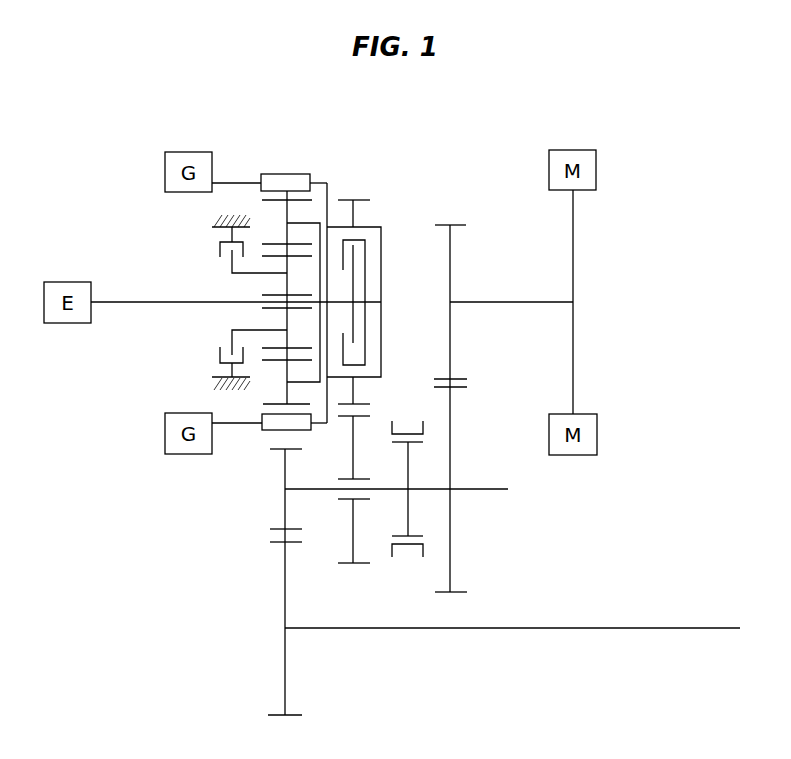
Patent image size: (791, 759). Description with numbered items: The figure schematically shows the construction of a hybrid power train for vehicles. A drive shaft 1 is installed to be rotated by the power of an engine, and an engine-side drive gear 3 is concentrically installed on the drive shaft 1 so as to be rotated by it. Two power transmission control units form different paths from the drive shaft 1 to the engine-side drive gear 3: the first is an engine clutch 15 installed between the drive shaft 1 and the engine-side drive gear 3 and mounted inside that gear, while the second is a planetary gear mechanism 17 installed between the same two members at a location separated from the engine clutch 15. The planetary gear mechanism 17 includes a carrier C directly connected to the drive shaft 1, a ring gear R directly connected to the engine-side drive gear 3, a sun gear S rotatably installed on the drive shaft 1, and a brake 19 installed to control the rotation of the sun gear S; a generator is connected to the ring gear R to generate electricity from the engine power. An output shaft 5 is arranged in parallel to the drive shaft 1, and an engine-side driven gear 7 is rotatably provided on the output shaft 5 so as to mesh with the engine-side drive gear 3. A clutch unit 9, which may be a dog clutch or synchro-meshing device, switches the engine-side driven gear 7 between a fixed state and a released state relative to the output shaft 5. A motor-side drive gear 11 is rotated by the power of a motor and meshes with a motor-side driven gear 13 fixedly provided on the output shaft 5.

The drive shaft 1 is at (157, 300).
The planetary gear mechanism 17 is at (280, 174).
The ring gear R is at (298, 182).
The sun gear S is at (275, 244).
The carrier C is at (305, 222).
The engine-side drive gear 3 is at (370, 200).
The engine clutch 15 is at (356, 253).
The brake 19 is at (220, 356).
The engine-side driven gear 7 is at (347, 568).
The output shaft 5 is at (497, 489).
The clutch unit 9 is at (408, 556).
The motor-side drive gear 11 is at (458, 224).
The motor-side driven gear 13 is at (458, 595).